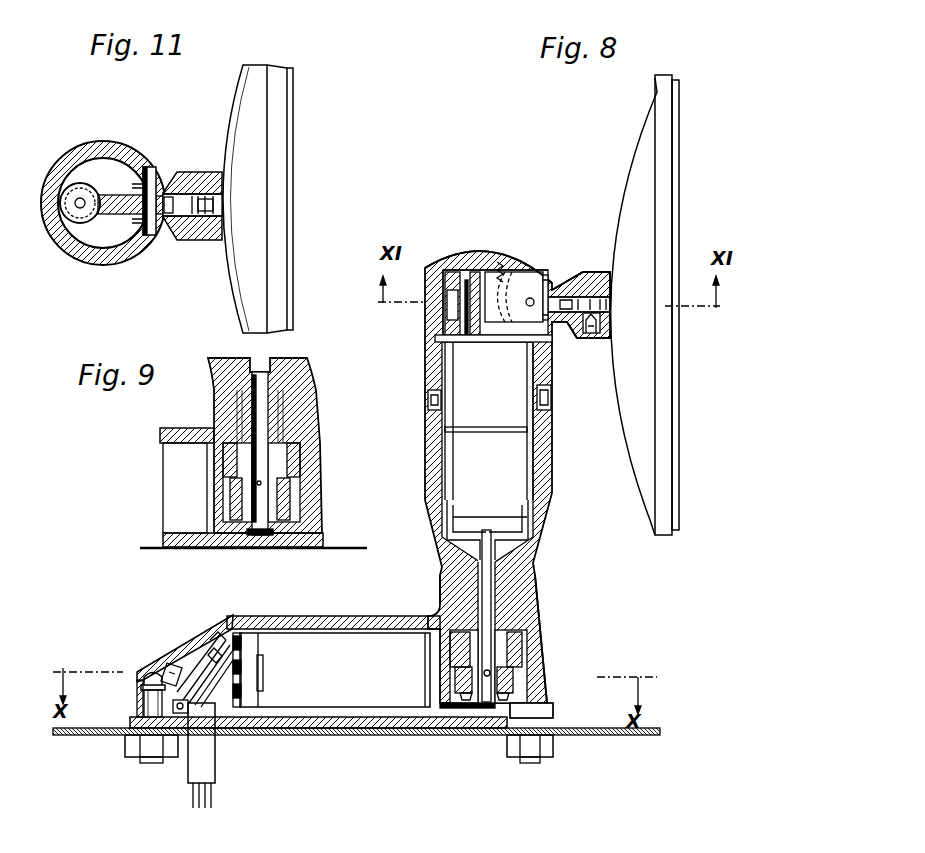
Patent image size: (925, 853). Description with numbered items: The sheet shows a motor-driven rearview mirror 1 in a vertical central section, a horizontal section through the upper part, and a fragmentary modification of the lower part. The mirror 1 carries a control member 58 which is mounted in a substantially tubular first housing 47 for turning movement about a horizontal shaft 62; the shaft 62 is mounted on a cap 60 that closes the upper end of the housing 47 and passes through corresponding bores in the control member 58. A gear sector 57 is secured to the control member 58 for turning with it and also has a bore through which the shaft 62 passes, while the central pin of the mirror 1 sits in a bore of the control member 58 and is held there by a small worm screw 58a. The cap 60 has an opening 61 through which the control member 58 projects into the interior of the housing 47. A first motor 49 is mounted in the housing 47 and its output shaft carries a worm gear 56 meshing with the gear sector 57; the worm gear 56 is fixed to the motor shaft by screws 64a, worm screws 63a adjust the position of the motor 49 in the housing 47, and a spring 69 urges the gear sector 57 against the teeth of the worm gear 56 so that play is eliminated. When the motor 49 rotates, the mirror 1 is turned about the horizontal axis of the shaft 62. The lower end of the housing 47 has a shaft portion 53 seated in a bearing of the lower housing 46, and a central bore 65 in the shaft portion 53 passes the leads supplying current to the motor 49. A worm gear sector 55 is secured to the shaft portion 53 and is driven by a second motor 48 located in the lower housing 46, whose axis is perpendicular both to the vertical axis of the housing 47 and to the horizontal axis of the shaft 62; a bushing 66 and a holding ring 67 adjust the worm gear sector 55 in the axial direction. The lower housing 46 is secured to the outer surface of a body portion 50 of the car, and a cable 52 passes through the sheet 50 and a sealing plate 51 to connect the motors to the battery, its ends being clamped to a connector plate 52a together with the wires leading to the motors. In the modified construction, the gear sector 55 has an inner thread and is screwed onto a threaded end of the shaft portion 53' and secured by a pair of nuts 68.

In FIG. 11, the rearview mirror 1 is at (292, 158).
In FIG. 9, the lower housing 46 is at (157, 444).
In FIG. 8, the lower housing 46 is at (322, 617).
In FIG. 9, the first housing 47 is at (302, 374).
In FIG. 8, the first housing 47 is at (428, 433).
In FIG. 8, the second motor 48 is at (370, 704).
In FIG. 8, the first motor 49 is at (513, 419).
In FIG. 8, the body portion 50 is at (598, 736).
In FIG. 8, the sealing plate 51 is at (298, 729).
In FIG. 8, the cable 52 is at (208, 772).
In FIG. 8, the connector plate 52a is at (193, 663).
In FIG. 8, the shaft portion 53 is at (522, 646).
In FIG. 9, the shaft portion 53' is at (290, 453).
In FIG. 9, the worm gear sector 55 is at (287, 488).
In FIG. 8, the worm gear sector 55 is at (517, 677).
In FIG. 11, the worm gear 56 is at (88, 220).
In FIG. 8, the worm gear 56 is at (424, 314).
In FIG. 11, the gear sector 57 is at (126, 214).
In FIG. 8, the gear sector 57 is at (508, 295).
In FIG. 11, the control member 58 is at (180, 241).
In FIG. 8, the control member 58 is at (563, 331).
In FIG. 8, the worm screw 58a is at (598, 322).
In FIG. 11, the cap 60 is at (60, 243).
In FIG. 8, the cap 60 is at (440, 267).
In FIG. 8, the opening 61 is at (536, 299).
In FIG. 11, the horizontal shaft 62 is at (148, 178).
In FIG. 8, the horizontal shaft 62 is at (540, 279).
In FIG. 8, the worm screws 63a is at (432, 398).
In FIG. 8, the screws 64a is at (438, 334).
In FIG. 8, the central bore 65 is at (484, 692).
In FIG. 8, the bushing 66 is at (523, 653).
In FIG. 8, the holding ring 67 is at (517, 712).
In FIG. 9, the nuts 68 is at (279, 504).
In FIG. 8, the spring 69 is at (497, 262).